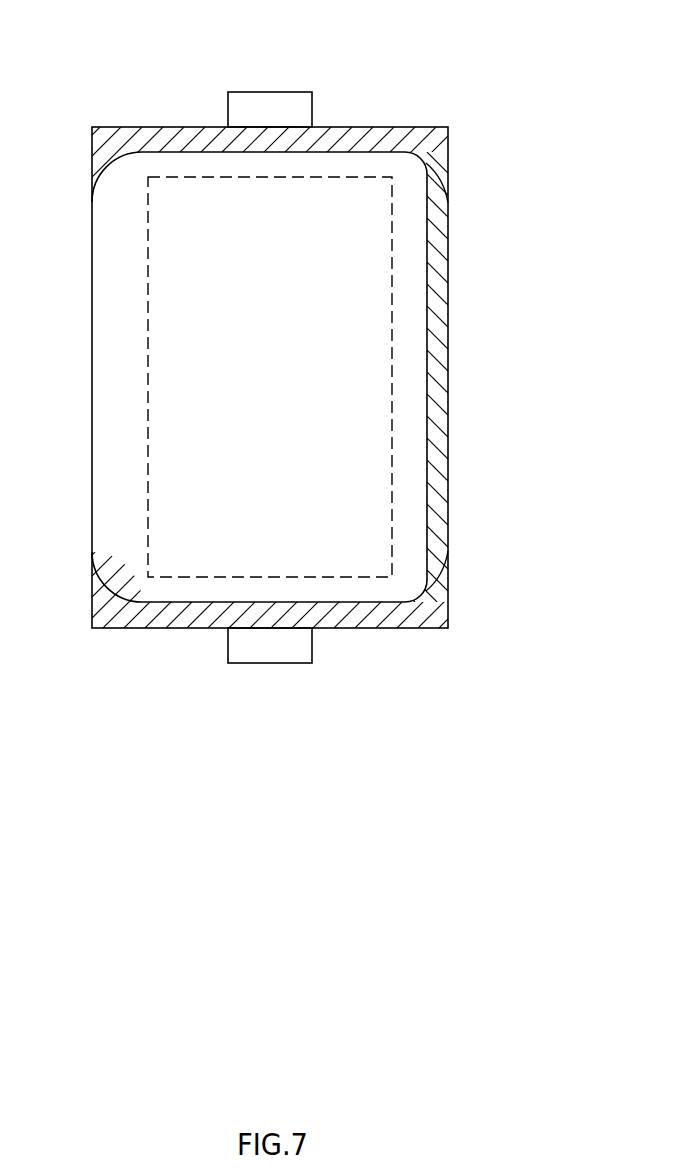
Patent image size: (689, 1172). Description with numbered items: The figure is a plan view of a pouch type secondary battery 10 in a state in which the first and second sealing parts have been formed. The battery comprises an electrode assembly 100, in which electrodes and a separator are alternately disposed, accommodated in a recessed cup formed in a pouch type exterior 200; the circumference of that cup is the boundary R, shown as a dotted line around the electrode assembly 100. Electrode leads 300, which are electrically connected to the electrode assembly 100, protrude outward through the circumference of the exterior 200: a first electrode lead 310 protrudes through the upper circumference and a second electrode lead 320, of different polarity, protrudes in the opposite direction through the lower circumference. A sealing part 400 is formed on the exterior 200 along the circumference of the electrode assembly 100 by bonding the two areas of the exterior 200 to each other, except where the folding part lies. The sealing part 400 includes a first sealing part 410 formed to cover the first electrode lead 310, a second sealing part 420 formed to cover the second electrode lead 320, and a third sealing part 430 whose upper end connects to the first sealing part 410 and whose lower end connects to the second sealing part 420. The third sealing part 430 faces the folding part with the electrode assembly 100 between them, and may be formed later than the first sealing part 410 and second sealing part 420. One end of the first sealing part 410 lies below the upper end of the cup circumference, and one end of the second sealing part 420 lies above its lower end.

The pouch type secondary battery 10 is at (371, 66).
The electrode assembly 100 is at (202, 421).
The pouch type exterior 200 is at (447, 468).
The electrode leads 300 is at (538, 585).
The first electrode lead 310 is at (237, 112).
The second electrode lead 320 is at (271, 648).
The sealing part 400 is at (538, 680).
The first sealing part 410 is at (443, 148).
The second sealing part 420 is at (407, 628).
The third sealing part 430 is at (437, 383).
The boundary R is at (393, 265).